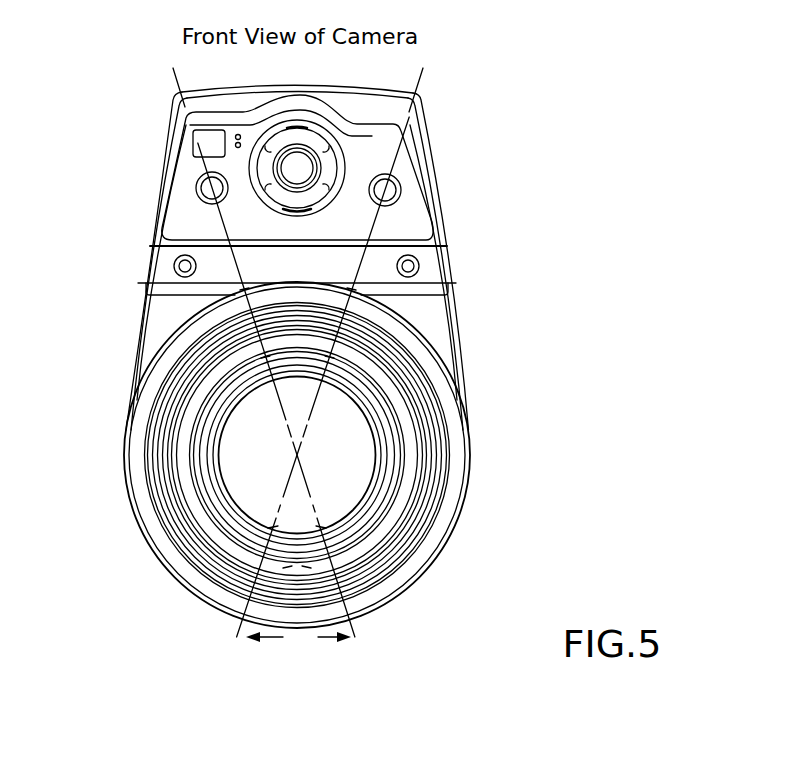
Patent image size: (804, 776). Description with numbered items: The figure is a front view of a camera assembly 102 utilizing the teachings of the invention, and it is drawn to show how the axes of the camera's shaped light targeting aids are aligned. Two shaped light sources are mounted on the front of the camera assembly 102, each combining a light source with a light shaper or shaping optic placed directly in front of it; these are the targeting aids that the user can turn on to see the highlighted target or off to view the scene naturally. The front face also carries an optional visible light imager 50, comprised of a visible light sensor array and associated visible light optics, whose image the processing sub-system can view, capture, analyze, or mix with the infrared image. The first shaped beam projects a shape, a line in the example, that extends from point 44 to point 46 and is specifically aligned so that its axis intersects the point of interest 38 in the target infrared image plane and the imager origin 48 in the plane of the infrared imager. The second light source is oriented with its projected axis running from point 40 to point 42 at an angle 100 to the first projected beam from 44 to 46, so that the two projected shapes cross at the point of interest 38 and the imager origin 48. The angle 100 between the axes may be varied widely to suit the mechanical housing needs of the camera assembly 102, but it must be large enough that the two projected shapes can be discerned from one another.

The camera assembly 102 is at (482, 348).
The point of interest 38 is at (318, 455).
The imager origin 48 is at (276, 455).
The end point of second projected axis 42 is at (356, 633).
The end point of first projected axis 46 is at (238, 633).
The angle 100 is at (298, 644).
The visible light imager 50 is at (297, 168).
The end point of second projected axis 40 is at (172, 87).
The end point of first projected axis 44 is at (422, 87).